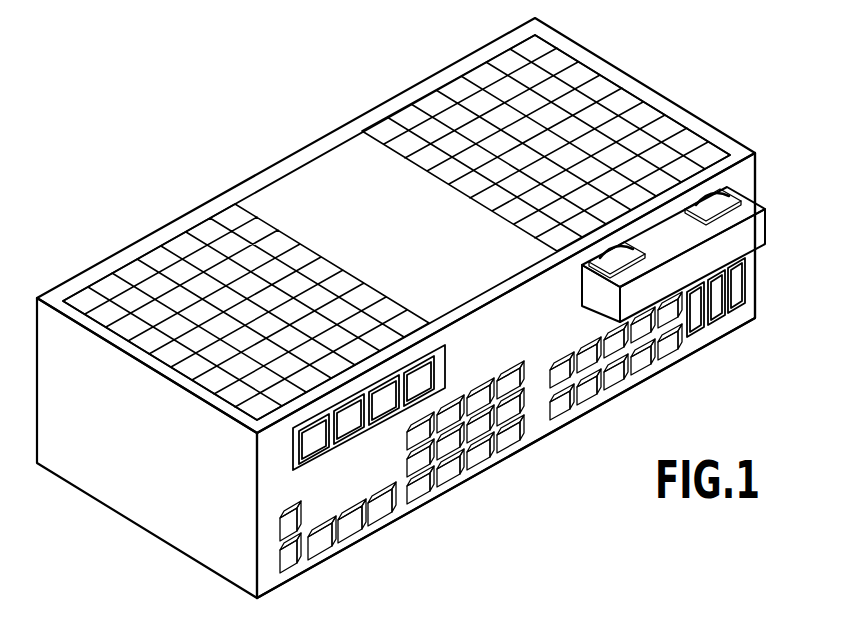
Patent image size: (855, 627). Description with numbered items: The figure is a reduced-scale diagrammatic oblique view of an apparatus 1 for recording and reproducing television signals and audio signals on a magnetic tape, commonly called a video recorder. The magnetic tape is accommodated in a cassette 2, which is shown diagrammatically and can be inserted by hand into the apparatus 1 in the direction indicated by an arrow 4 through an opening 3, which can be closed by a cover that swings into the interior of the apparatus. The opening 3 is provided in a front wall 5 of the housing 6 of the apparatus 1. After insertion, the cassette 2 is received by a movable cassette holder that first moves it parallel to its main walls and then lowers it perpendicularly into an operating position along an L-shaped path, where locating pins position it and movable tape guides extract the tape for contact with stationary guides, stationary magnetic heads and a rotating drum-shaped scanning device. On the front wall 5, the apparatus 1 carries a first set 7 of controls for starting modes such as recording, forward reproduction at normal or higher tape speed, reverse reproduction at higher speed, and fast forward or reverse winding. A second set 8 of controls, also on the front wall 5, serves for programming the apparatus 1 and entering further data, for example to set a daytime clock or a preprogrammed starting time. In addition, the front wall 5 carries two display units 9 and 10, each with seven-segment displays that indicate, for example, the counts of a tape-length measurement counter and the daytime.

The apparatus 1 is at (652, 70).
The cassette 2 is at (696, 222).
The opening 3 is at (732, 183).
The arrow 4 is at (670, 233).
The front wall 5 is at (537, 427).
The housing 6 is at (148, 537).
The first set of controls 7 is at (612, 398).
The second set of controls 8 is at (437, 495).
The display unit 9 is at (708, 322).
The display unit 10 is at (292, 479).